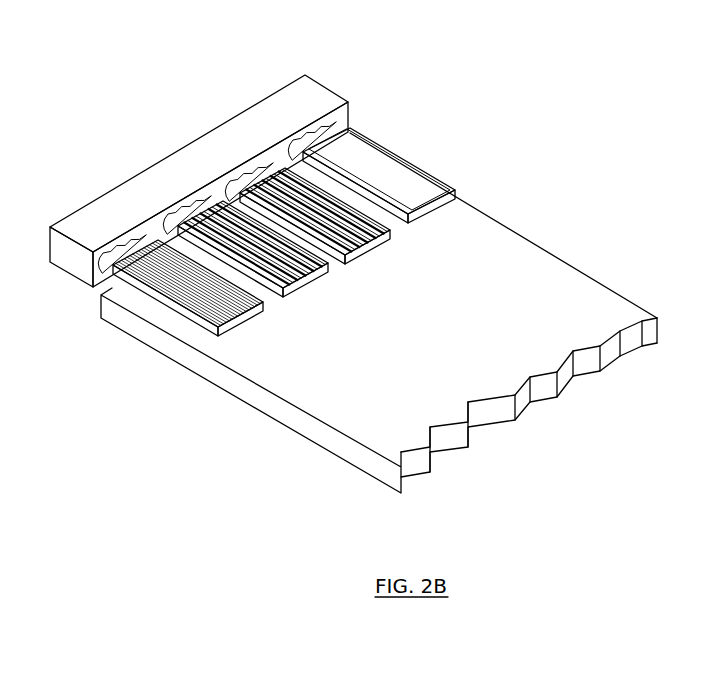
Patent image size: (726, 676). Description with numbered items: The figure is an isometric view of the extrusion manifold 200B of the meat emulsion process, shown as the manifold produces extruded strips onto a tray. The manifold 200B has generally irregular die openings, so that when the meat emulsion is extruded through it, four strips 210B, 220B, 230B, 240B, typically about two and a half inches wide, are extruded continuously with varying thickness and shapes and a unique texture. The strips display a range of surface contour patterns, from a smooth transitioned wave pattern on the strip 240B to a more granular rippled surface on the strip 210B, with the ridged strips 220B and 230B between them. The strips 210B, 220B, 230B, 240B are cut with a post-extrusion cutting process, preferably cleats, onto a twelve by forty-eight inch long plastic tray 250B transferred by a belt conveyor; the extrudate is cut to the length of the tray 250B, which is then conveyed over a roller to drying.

The extrusion manifold 200B is at (350, 102).
The extruded strip 210B is at (252, 323).
The extruded strip 220B is at (312, 284).
The extruded strip 230B is at (373, 252).
The extruded strip 240B is at (433, 210).
The plastic tray 250B is at (595, 280).